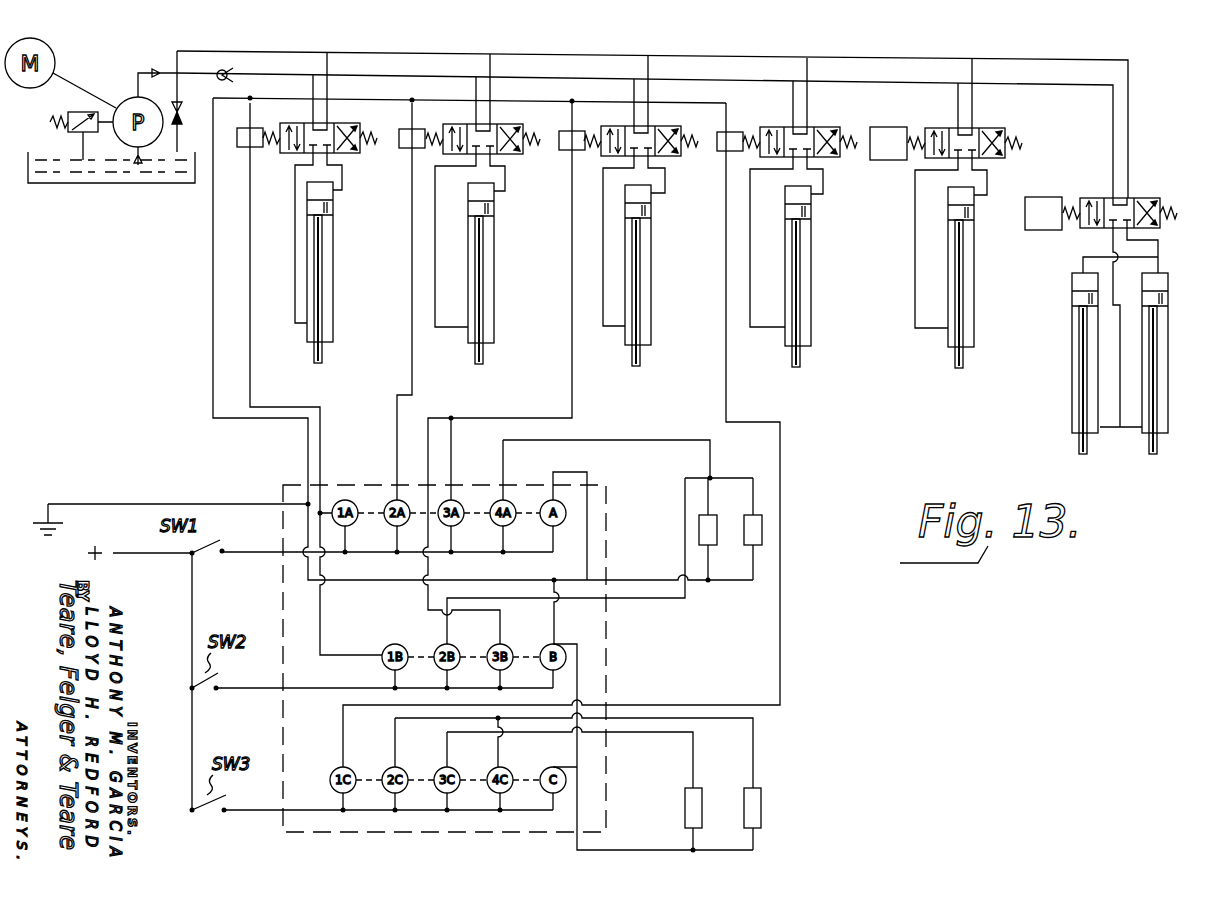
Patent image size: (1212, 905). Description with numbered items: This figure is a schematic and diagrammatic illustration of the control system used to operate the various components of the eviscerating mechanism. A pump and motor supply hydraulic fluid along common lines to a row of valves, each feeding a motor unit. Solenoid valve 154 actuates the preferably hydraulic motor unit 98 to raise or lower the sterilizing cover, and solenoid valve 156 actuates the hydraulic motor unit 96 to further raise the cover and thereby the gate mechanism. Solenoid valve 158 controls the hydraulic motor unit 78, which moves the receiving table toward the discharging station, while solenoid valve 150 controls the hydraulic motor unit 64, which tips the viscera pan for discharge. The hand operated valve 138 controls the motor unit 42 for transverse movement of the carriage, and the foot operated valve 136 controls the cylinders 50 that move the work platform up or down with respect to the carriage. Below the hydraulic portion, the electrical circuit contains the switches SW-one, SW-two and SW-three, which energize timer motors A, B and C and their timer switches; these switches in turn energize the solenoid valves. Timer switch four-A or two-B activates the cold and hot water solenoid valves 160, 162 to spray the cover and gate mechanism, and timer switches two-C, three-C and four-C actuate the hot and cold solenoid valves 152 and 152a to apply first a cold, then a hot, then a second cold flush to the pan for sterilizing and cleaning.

The hydraulic motor unit 98 is at (333, 283).
The hydraulic motor unit 96 is at (494, 283).
The hydraulic motor unit 78 is at (651, 283).
The hydraulic motor unit 64 is at (811, 280).
The motor unit 42 is at (974, 283).
The cylinders 50 is at (1072, 408).
The solenoid valve 154 is at (336, 156).
The solenoid valve 156 is at (499, 157).
The solenoid valve 158 is at (661, 159).
The solenoid valve 150 is at (822, 128).
The hand operated valve 138 is at (990, 131).
The foot operated valve 136 is at (1142, 198).
The cold water solenoid valve 160 is at (699, 535).
The hot water solenoid valve 162 is at (762, 535).
The hot and cold solenoid valve 152 is at (700, 803).
The hot and cold solenoid valve 152a is at (760, 805).